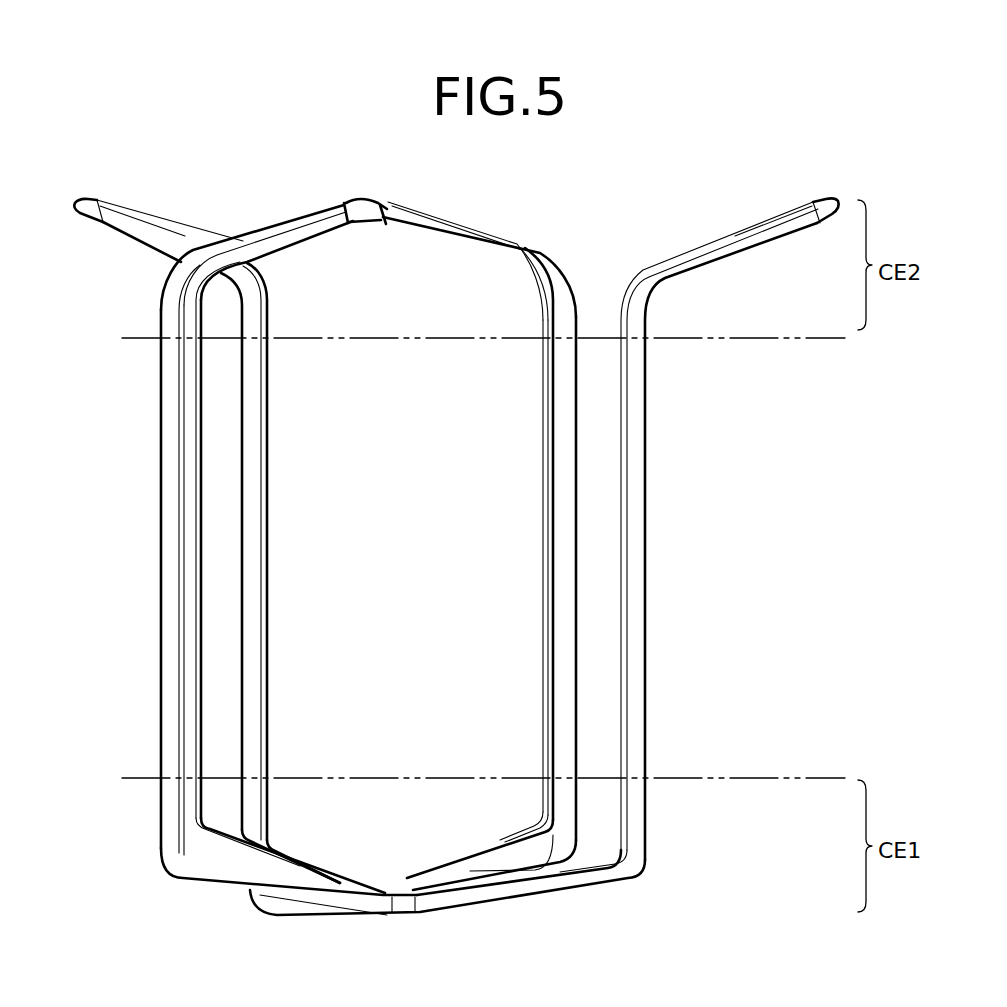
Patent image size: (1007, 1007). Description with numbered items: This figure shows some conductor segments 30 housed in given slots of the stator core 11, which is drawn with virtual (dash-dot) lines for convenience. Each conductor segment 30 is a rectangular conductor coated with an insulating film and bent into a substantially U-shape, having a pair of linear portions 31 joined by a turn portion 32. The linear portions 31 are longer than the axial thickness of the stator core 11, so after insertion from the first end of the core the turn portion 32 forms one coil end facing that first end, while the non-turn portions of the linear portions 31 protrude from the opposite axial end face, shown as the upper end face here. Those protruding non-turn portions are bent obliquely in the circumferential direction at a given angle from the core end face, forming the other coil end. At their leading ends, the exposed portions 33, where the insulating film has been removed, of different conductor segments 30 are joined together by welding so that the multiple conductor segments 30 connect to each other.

The stator core 11 is at (133, 338).
The conductor segment 30 is at (247, 233).
The linear portion 31 is at (570, 443).
The turn portion 32 is at (450, 872).
The exposed portion 33 is at (359, 200).